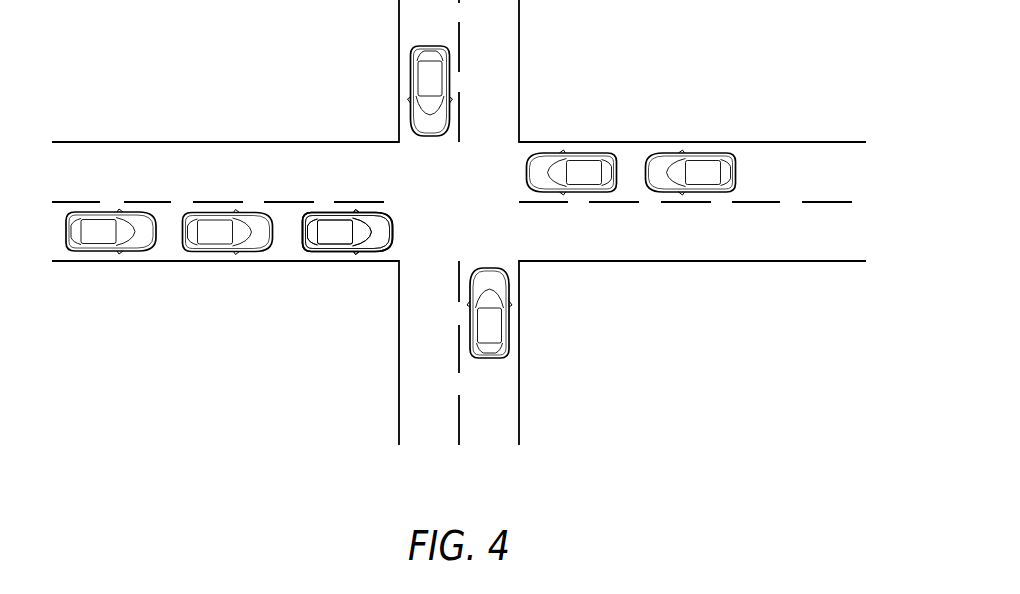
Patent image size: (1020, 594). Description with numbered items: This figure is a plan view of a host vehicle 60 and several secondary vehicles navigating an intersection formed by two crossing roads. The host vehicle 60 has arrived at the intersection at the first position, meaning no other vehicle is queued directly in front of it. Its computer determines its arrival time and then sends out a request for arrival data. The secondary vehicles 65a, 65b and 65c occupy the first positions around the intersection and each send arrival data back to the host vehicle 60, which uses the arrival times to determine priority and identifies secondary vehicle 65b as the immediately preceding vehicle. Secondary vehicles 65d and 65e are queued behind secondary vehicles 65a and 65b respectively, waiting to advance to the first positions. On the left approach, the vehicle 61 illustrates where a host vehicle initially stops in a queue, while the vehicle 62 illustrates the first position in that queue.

The host vehicle 60 is at (413, 84).
The vehicle 61 is at (105, 250).
The vehicle 62 is at (340, 212).
The secondary vehicle 65a is at (575, 153).
The secondary vehicle 65b is at (343, 250).
The secondary vehicle 65c is at (507, 330).
The secondary vehicle 65d is at (695, 153).
The secondary vehicle 65e is at (222, 250).